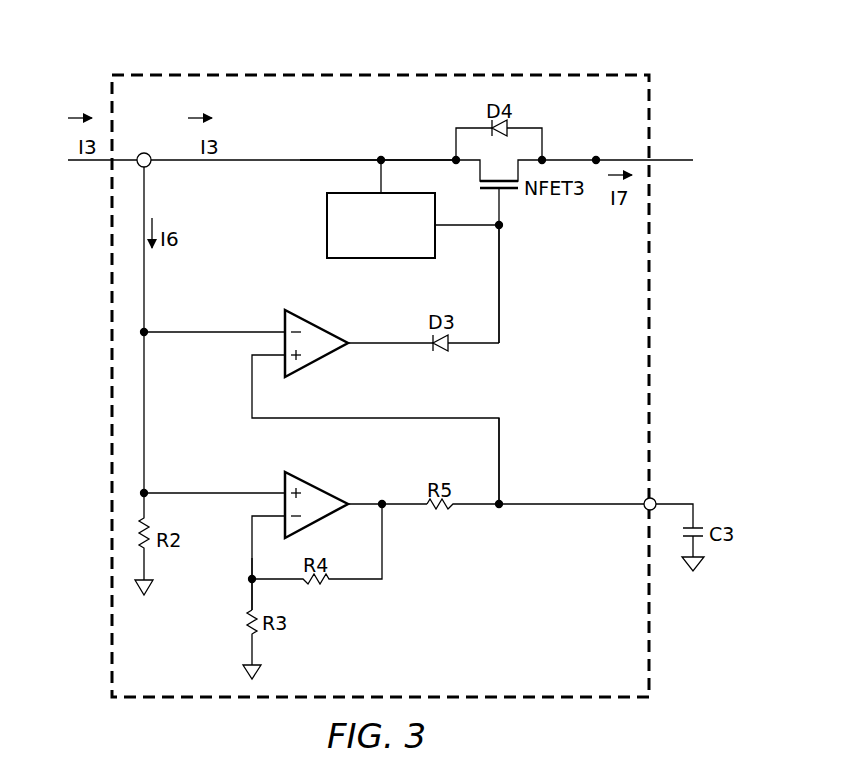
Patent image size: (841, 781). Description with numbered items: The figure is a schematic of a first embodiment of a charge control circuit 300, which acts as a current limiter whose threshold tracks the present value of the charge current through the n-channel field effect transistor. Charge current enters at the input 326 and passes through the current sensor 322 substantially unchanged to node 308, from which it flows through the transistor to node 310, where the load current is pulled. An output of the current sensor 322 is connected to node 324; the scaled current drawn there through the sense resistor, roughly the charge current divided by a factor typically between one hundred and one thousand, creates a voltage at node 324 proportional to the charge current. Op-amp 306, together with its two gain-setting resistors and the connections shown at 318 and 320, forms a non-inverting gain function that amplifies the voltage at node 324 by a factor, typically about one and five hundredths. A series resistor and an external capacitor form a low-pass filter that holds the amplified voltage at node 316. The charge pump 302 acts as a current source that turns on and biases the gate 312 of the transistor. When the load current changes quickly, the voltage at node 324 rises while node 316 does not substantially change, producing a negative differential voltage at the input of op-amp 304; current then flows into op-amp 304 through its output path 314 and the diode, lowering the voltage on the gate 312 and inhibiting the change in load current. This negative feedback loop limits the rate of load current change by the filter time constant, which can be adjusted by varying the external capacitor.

The charge control circuit 300 is at (260, 73).
The charge pump 302 is at (327, 216).
The op-amp 304 is at (340, 306).
The op-amp 306 is at (338, 468).
The node 308 is at (349, 157).
The node 310 is at (596, 153).
The gate 312 is at (500, 282).
The amplifier output line 314 is at (385, 346).
The node 316 is at (500, 462).
The amplifier output line 318 is at (382, 545).
The node 320 is at (251, 558).
The current sensor 322 is at (147, 152).
The node 324 is at (215, 330).
The input 326 is at (93, 163).